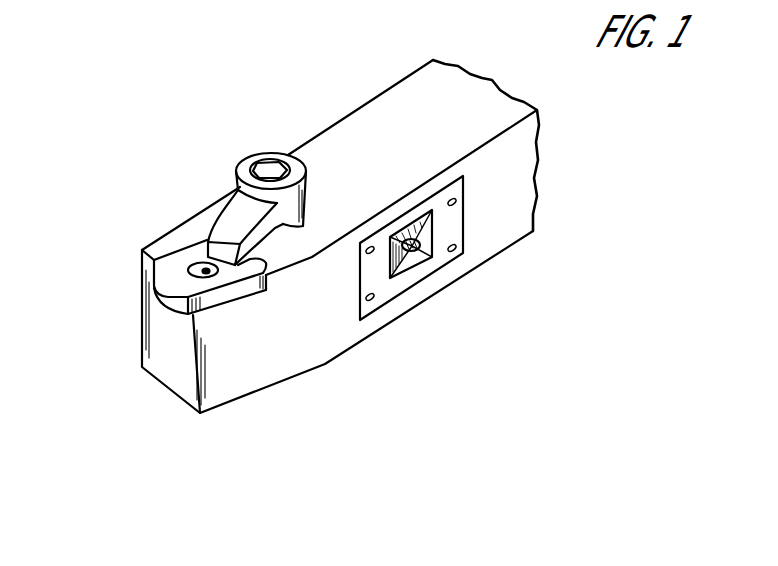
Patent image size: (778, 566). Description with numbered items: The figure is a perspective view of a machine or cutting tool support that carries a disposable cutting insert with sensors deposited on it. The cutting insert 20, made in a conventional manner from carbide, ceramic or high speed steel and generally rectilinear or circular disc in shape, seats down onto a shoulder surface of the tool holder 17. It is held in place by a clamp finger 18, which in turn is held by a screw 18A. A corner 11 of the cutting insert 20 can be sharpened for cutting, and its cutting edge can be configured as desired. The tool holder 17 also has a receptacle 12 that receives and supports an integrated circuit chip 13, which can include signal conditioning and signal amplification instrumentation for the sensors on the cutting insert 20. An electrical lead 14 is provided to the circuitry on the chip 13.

The corner 11 is at (358, 274).
The receptacle 12 is at (430, 233).
The integrated circuit chip 13 is at (420, 250).
The electrical lead 14 is at (328, 277).
The tool holder 17 is at (415, 85).
The clamp finger 18 is at (201, 190).
The screw 18A is at (268, 160).
The cutting insert 20 is at (165, 260).